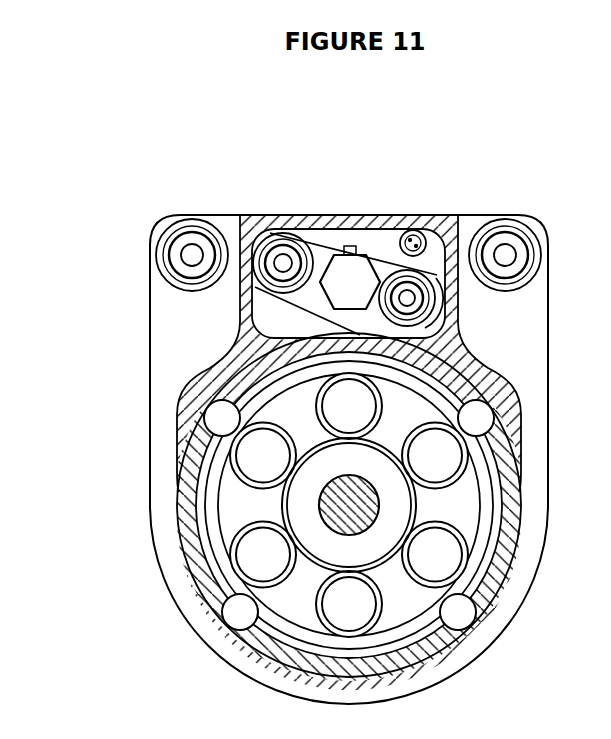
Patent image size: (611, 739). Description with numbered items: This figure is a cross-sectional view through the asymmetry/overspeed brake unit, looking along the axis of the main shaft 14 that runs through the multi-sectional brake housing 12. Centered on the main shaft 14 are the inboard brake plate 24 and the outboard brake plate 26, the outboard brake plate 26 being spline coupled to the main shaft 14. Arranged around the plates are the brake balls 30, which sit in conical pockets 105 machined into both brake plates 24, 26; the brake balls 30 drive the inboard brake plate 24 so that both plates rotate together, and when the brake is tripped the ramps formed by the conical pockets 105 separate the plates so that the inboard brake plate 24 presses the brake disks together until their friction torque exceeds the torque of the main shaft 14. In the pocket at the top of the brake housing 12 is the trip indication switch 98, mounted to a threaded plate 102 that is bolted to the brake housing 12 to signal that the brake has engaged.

The brake housing 12 is at (523, 325).
The main shaft 14 is at (342, 535).
The inboard brake plate 24 is at (293, 412).
The outboard brake plate 26 is at (393, 502).
The brake balls 30 is at (250, 553).
The trip indication switch 98 is at (360, 272).
The threaded plate 102 is at (320, 242).
The conical pockets 105 is at (245, 478).